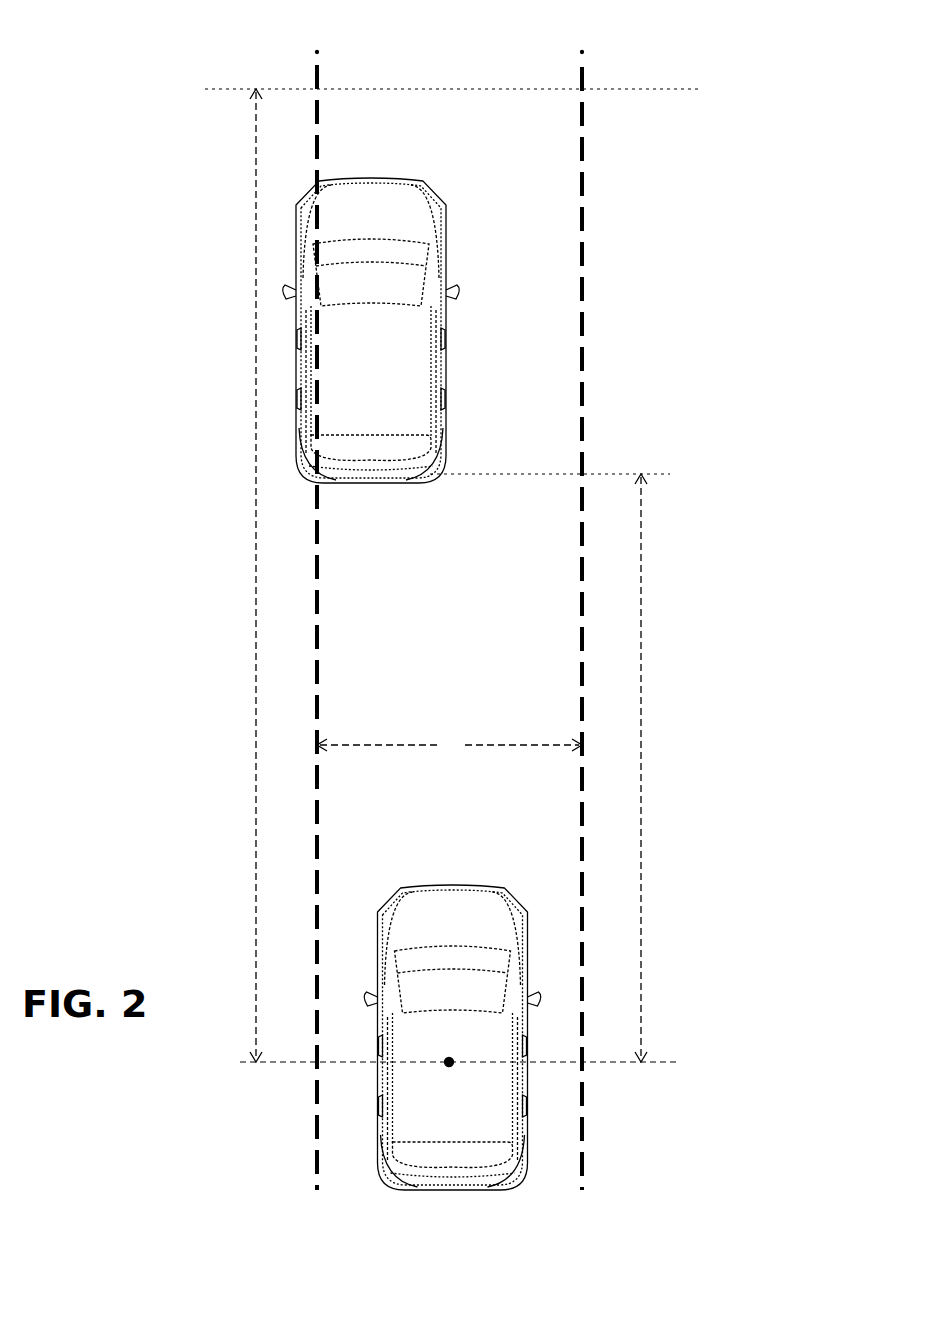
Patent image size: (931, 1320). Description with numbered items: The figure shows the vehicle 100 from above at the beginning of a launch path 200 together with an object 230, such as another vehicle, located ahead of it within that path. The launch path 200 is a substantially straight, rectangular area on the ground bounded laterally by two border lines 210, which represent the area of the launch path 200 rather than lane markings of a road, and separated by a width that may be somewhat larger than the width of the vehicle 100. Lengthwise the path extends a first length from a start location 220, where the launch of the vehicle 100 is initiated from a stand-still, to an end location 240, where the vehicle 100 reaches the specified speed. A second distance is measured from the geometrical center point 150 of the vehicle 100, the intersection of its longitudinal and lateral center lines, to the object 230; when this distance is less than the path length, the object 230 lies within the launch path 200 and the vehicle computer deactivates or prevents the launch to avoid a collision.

The vehicle 100 is at (452, 1037).
The geometrical center point 150 is at (455, 1065).
The launch path 200 is at (555, 193).
The border lines 210 is at (323, 605).
The start location 220 is at (343, 1063).
The object 230 is at (371, 330).
The end location 240 is at (387, 89).